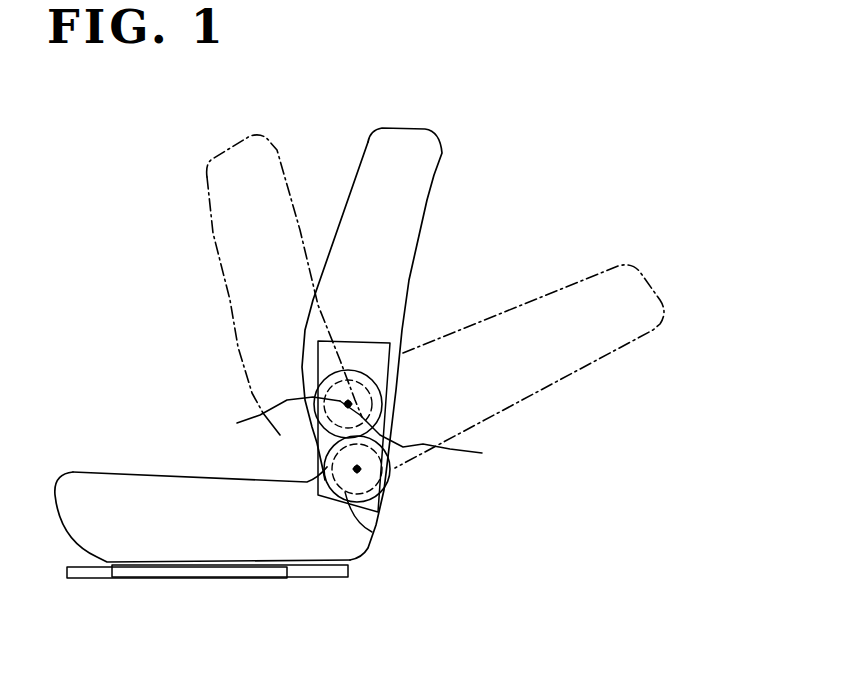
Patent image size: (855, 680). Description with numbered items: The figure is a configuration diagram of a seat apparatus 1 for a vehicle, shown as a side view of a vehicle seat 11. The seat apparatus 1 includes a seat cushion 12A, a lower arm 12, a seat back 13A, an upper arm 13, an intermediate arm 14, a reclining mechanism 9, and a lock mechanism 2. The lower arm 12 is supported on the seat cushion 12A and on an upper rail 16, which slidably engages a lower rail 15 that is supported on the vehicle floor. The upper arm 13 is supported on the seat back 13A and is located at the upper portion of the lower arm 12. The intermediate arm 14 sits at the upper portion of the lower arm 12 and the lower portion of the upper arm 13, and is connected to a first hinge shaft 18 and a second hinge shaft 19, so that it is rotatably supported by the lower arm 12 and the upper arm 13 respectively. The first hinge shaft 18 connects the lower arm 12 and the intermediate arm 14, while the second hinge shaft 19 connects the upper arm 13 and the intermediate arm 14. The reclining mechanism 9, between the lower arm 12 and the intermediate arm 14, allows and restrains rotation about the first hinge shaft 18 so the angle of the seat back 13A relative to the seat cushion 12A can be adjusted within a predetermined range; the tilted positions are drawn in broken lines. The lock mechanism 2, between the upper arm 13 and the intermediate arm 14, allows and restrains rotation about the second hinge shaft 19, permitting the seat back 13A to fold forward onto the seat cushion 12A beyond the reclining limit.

The seat apparatus 1 is at (100, 168).
The vehicle seat 11 is at (358, 380).
The lock mechanism 2 is at (237, 423).
The reclining mechanism 9 is at (397, 548).
The lower arm 12 is at (343, 502).
The seat cushion 12A is at (74, 472).
The upper arm 13 is at (375, 343).
The seat back 13A is at (428, 200).
The intermediate arm 14 is at (405, 442).
The lower rail 15 is at (93, 580).
The upper rail 16 is at (317, 580).
The first hinge shaft 18 is at (358, 468).
The second hinge shaft 19 is at (424, 433).